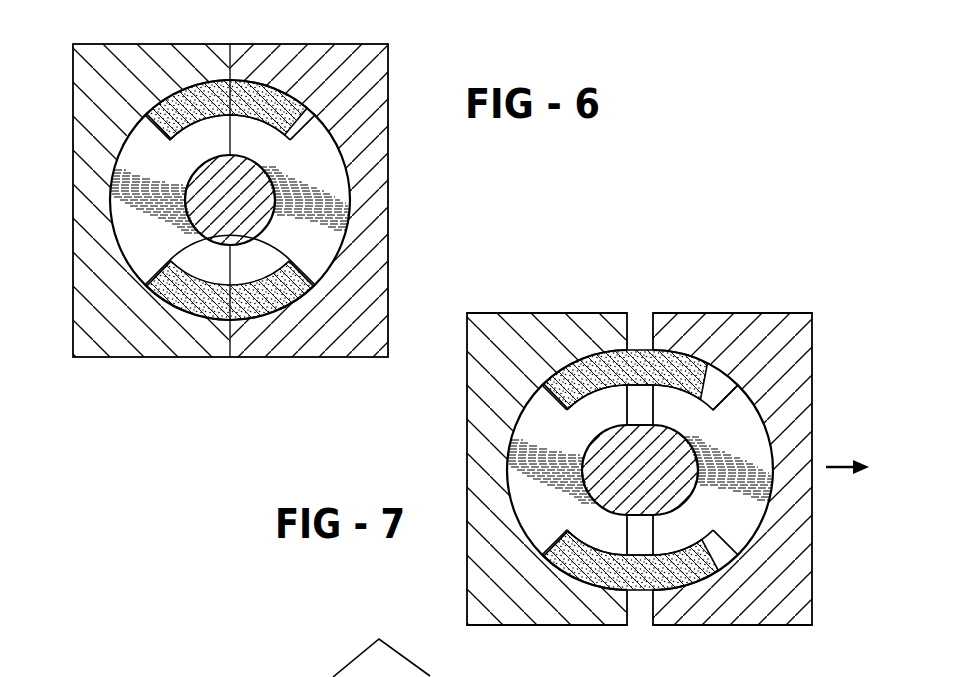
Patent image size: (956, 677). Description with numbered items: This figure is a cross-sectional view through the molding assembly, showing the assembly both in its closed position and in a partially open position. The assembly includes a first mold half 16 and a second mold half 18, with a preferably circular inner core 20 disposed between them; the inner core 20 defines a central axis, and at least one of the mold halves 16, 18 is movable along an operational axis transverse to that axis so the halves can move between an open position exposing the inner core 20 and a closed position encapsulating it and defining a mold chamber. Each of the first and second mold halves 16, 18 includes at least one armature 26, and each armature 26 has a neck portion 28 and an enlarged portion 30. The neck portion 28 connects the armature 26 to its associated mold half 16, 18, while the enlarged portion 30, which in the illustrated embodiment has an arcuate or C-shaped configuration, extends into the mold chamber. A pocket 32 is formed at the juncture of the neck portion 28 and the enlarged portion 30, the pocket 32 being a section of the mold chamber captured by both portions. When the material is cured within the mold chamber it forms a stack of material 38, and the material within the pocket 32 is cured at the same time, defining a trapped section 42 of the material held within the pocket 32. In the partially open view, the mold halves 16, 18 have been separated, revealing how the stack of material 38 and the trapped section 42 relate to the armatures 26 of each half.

In FIG. 6, the first mold half 16 is at (382, 121).
In FIG. 7, the first mold half 16 is at (808, 373).
In FIG. 6, the second mold half 18 is at (76, 182).
In FIG. 7, the second mold half 18 is at (503, 396).
In FIG. 6, the inner core 20 is at (217, 173).
In FIG. 7, the inner core 20 is at (643, 435).
In FIG. 6, the armature 26 is at (150, 258).
In FIG. 7, the armature 26 is at (542, 517).
In FIG. 6, the neck portion 28 is at (143, 128).
In FIG. 7, the neck portion 28 is at (752, 408).
In FIG. 6, the enlarged portion 30 is at (238, 322).
In FIG. 7, the enlarged portion 30 is at (714, 408).
In FIG. 7, the pocket 32 is at (742, 410).
In FIG. 6, the stack of material 38 is at (208, 102).
In FIG. 7, the stack of material 38 is at (611, 375).
In FIG. 6, the trapped section 42 is at (303, 125).
In FIG. 7, the trapped section 42 is at (564, 404).